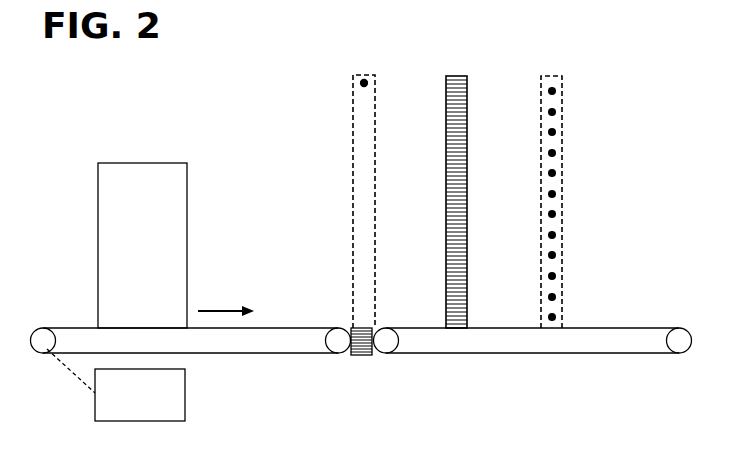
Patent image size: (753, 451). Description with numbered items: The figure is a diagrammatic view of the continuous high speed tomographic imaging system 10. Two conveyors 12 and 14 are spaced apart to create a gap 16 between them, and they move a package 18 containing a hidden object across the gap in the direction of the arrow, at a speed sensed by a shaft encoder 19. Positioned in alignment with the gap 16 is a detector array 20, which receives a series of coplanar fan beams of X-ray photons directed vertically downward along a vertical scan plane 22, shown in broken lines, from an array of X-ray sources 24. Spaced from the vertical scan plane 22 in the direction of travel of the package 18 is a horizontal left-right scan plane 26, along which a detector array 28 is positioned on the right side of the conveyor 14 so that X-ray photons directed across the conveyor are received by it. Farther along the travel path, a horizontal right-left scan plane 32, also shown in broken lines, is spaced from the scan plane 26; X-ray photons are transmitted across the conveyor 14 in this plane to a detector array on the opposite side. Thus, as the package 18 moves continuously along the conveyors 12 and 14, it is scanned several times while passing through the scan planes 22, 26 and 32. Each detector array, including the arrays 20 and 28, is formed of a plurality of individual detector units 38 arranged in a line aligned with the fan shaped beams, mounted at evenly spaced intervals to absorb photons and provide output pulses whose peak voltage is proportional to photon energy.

The continuous high speed tomographic imaging system 10 is at (666, 214).
The conveyor 12 is at (280, 333).
The conveyor 14 is at (610, 328).
The gap 16 is at (352, 353).
The package 18 is at (130, 254).
The shaft encoder 19 is at (128, 405).
The detector array 20 is at (362, 355).
The vertical scan plane 22 is at (351, 178).
The array of X-ray sources 24 is at (370, 83).
The horizontal left-right scan plane 26 is at (465, 305).
The detector array 28 is at (465, 185).
The horizontal right-left scan plane 32 is at (565, 153).
The individual detector units 38 is at (466, 143).